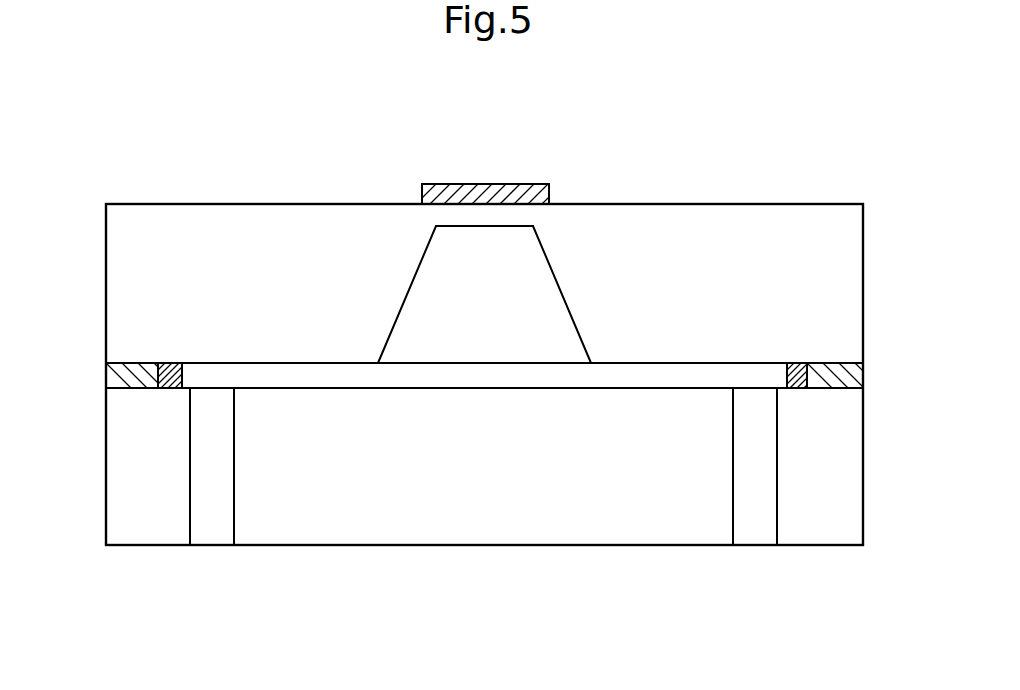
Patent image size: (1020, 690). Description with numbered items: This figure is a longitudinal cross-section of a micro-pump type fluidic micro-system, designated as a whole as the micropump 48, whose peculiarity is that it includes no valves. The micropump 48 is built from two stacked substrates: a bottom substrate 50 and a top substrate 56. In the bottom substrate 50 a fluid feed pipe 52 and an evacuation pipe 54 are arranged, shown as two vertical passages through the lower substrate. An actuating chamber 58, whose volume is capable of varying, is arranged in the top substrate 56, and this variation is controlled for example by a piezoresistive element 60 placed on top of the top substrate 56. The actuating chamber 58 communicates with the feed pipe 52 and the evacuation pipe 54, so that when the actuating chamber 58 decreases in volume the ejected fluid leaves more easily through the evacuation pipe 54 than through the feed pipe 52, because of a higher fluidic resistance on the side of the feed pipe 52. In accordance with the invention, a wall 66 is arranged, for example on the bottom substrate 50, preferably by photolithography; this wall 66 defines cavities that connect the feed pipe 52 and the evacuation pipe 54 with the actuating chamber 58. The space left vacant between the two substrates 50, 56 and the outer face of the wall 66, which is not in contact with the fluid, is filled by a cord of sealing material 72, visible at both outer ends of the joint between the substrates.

The micropump 48 is at (700, 122).
The bottom substrate 50 is at (845, 507).
The fluid feed pipe 52 is at (208, 532).
The evacuation pipe 54 is at (754, 532).
The top substrate 56 is at (847, 270).
The actuating chamber 58 is at (484, 294).
The piezoresistive element 60 is at (433, 193).
The wall 66 is at (170, 387).
The cord of sealing material 72 is at (120, 375).